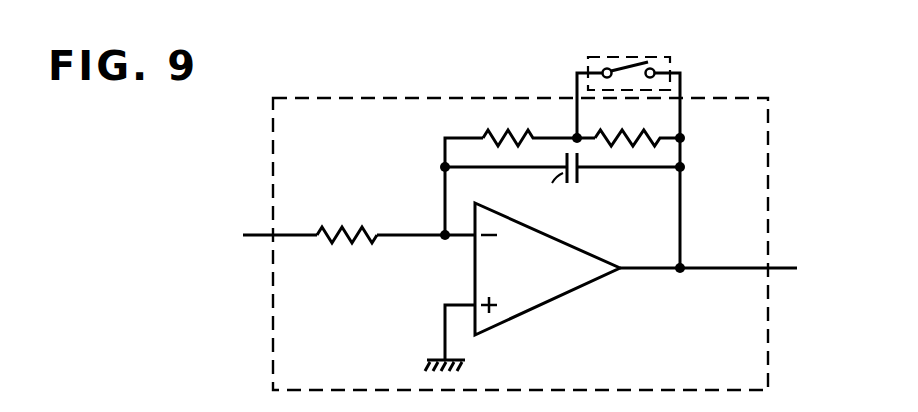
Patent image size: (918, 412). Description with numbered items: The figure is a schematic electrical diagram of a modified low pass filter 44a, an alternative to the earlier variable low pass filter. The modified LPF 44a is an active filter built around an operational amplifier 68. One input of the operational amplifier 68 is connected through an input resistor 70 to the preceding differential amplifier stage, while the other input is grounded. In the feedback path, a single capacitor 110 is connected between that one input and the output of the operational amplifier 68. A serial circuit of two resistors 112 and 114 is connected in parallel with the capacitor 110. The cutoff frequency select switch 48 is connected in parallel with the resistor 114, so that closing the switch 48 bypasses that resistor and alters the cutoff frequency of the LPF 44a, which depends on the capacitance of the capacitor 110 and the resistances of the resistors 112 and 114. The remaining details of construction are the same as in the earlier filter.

The modified low pass filter 44a is at (772, 163).
The cutoff frequency select switch 48 is at (670, 66).
The operational amplifier 68 is at (572, 293).
The input resistor 70 is at (338, 224).
The capacitor 110 is at (580, 172).
The resistor 112 is at (483, 134).
The resistor 114 is at (650, 137).